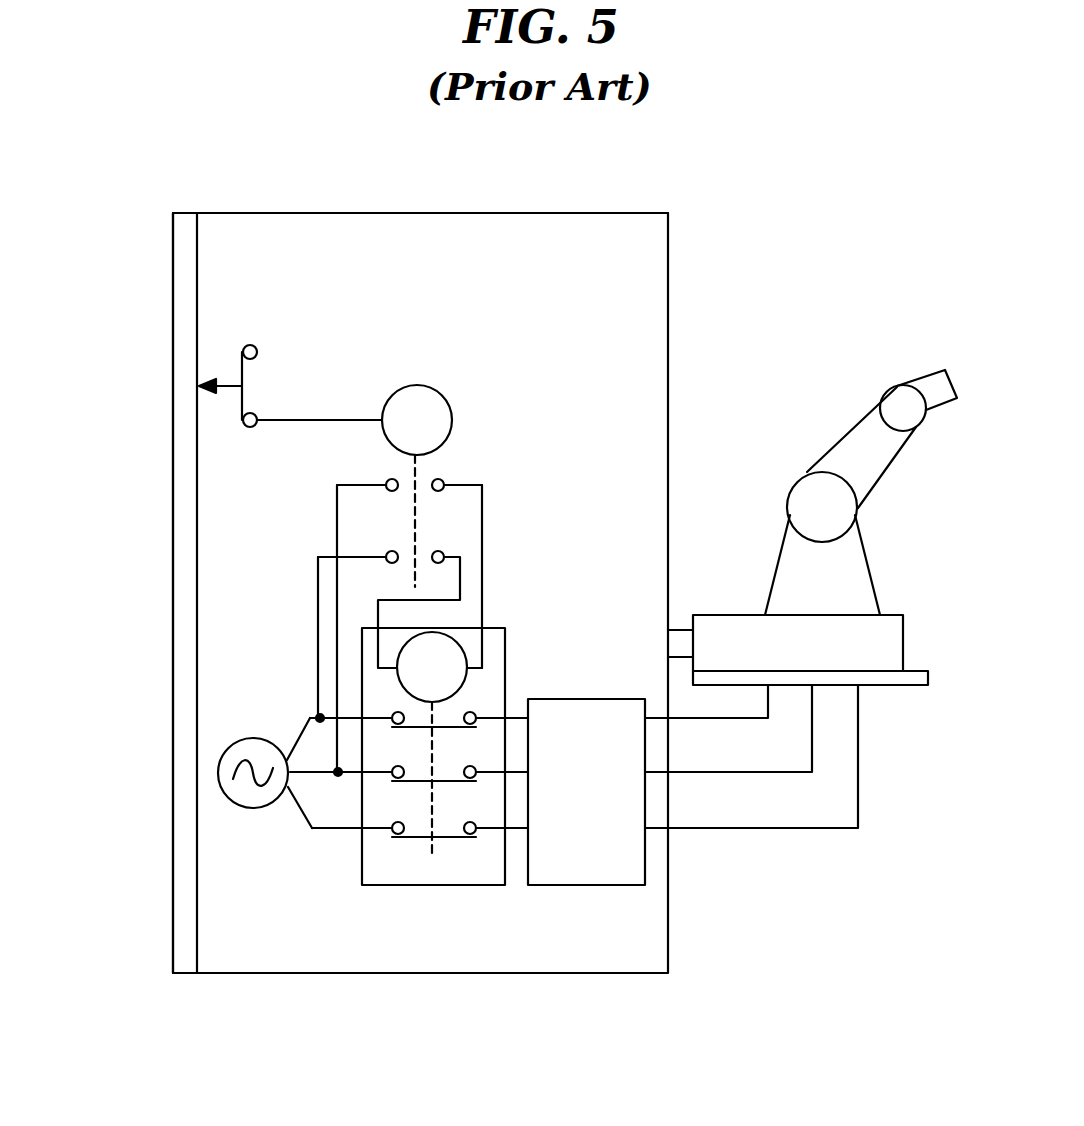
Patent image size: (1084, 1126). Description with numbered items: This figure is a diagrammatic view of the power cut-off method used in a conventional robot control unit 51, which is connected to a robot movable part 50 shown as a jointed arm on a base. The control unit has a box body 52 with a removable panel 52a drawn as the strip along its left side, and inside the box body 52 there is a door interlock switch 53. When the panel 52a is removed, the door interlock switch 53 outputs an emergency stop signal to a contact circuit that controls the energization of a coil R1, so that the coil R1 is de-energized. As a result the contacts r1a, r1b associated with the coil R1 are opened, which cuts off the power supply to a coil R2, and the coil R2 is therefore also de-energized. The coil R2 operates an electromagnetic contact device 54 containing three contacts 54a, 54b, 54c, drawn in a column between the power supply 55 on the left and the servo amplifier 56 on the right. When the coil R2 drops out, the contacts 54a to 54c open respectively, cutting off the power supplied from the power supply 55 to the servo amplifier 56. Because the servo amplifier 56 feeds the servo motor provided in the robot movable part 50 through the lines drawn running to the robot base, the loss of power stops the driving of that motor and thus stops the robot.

The robot movable part 50 is at (857, 443).
The robot control unit 51 is at (677, 277).
The box body 52 is at (527, 213).
The panel 52a is at (170, 285).
The door interlock switch 53 is at (245, 382).
The electromagnetic contact device 54 is at (497, 756).
The contact 54a is at (443, 727).
The contact 54b is at (442, 782).
The contact 54c is at (413, 835).
The power supply 55 is at (253, 808).
The servo amplifier 56 is at (622, 857).
The coil R1 is at (417, 486).
The coil R2 is at (432, 742).
The contact r1a is at (419, 615).
The contact r1b is at (389, 634).